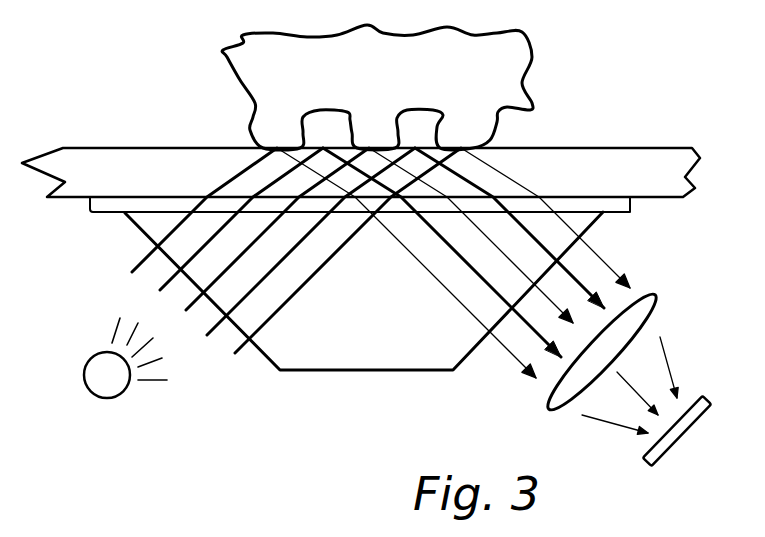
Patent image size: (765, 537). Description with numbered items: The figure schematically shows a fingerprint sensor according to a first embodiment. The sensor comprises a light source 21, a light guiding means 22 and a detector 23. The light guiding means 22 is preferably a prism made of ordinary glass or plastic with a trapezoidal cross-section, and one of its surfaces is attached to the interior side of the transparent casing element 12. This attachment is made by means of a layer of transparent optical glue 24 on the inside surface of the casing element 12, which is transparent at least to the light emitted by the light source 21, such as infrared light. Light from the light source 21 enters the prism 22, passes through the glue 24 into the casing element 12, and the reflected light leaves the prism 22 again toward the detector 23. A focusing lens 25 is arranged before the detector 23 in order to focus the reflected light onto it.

The transparent casing element 12 is at (662, 168).
The light source 21 is at (108, 372).
The light guiding means 22 is at (352, 357).
The detector 23 is at (682, 425).
The transparent glue 24 is at (632, 205).
The focusing lens 25 is at (643, 313).